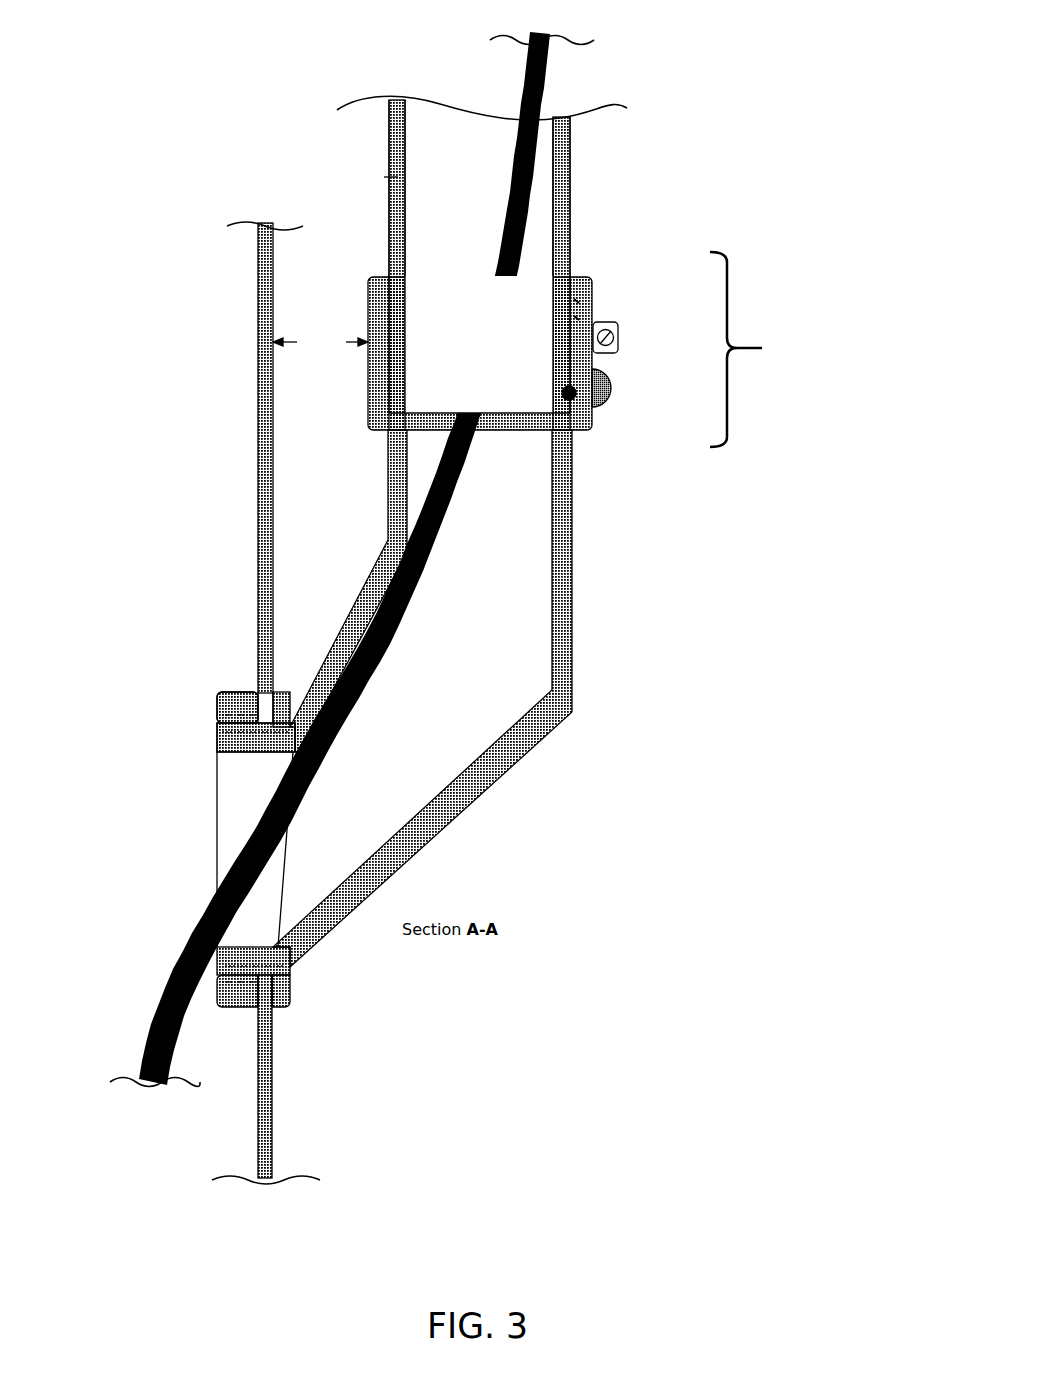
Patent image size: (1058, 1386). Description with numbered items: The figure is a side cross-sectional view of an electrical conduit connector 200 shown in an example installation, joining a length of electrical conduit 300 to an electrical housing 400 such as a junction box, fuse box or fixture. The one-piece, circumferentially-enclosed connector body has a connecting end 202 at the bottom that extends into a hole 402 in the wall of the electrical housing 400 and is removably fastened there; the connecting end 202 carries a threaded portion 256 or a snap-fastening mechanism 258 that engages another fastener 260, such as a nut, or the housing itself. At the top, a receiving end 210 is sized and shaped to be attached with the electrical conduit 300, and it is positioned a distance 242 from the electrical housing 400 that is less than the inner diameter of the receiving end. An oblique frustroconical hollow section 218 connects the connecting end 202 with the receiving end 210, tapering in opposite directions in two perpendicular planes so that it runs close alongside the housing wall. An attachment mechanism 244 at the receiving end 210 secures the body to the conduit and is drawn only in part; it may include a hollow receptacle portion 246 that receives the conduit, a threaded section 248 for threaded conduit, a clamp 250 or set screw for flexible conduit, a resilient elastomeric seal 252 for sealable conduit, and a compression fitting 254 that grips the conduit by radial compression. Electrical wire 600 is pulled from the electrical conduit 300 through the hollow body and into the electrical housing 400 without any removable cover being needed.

The electrical conduit connector 200 is at (825, 663).
The connecting end 202 is at (250, 744).
The receiving end 210 is at (378, 295).
The oblique frustroconical hollow section 218 is at (552, 690).
The distance 242 is at (320, 341).
The attachment mechanism 244 is at (770, 349).
The hollow receptacle portion 246 is at (578, 298).
The threaded section 248 is at (578, 317).
The clamp 250 is at (618, 337).
The resilient elastomeric seal 252 is at (572, 398).
The compression fitting 254 is at (607, 390).
The threaded portion 256 is at (238, 732).
The snap-fastening mechanism 258 is at (201, 758).
The fastener 260 is at (233, 703).
The electrical conduit 300 is at (573, 193).
The electrical housing 400 is at (268, 417).
The hole 402 is at (257, 690).
The electrical wire 600 is at (165, 1005).